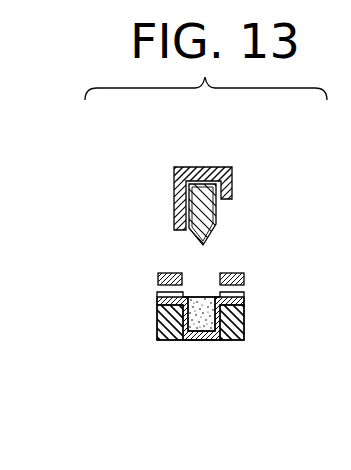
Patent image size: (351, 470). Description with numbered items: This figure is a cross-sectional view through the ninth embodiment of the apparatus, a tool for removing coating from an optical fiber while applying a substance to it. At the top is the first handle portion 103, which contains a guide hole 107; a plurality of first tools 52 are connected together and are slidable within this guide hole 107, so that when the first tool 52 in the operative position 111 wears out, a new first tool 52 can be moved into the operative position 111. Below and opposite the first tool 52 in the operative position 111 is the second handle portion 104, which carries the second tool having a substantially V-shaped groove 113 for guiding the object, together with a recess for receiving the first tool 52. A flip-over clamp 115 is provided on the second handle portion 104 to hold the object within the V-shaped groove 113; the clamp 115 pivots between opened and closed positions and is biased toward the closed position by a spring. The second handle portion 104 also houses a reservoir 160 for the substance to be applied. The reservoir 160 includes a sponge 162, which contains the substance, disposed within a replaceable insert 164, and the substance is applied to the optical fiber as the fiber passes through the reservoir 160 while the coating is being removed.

The first tool 52 is at (216, 213).
The first handle portion 103 is at (186, 172).
The second handle portion 104 is at (157, 328).
The guide hole 107 is at (212, 172).
The operative position 111 is at (250, 229).
The V-shaped groove 113 is at (157, 298).
The flip-over clamp 115 is at (157, 279).
The reservoir 160 is at (183, 359).
The sponge 162 is at (199, 300).
The replaceable insert 164 is at (208, 342).